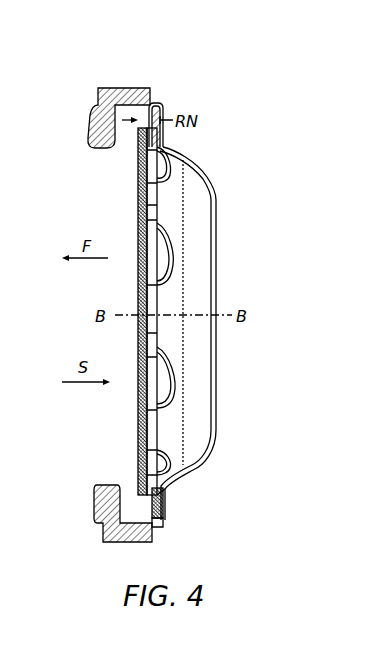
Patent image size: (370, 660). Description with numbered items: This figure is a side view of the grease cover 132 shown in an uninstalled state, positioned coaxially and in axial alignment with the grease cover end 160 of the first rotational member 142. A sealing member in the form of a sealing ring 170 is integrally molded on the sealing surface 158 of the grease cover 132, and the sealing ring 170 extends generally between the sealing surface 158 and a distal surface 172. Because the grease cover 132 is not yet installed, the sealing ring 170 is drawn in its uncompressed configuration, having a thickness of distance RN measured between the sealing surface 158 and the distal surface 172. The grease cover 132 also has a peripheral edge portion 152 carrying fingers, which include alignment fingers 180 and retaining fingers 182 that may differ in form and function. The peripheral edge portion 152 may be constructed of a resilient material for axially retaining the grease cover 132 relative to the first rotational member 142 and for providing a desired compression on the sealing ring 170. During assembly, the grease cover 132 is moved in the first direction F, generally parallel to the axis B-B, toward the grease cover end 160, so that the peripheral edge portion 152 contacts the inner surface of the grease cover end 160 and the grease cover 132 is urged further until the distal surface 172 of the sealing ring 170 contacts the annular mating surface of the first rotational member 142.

The first rotational member 142 is at (115, 88).
The grease cover end 160 is at (157, 92).
The sealing ring 170 is at (118, 125).
The distal surface 172 is at (134, 447).
The grease cover 132 is at (199, 144).
The retaining fingers 182 is at (170, 495).
The alignment fingers 180 is at (170, 513).
The peripheral edge portion 152 is at (172, 528).
The sealing surface 158 is at (140, 513).